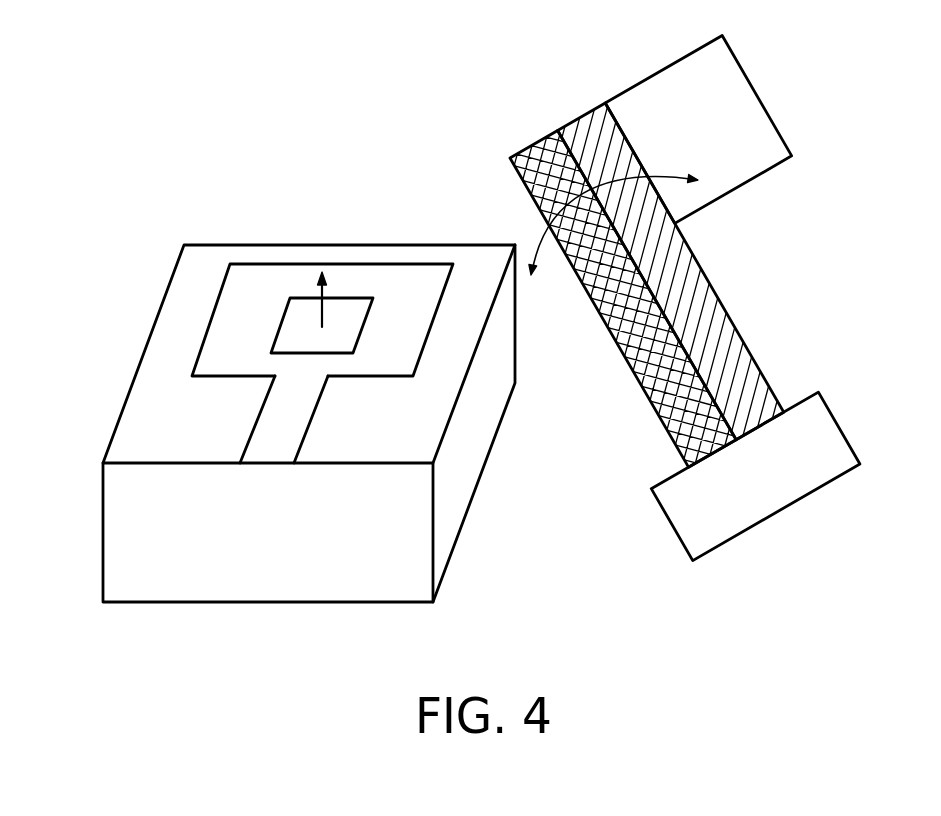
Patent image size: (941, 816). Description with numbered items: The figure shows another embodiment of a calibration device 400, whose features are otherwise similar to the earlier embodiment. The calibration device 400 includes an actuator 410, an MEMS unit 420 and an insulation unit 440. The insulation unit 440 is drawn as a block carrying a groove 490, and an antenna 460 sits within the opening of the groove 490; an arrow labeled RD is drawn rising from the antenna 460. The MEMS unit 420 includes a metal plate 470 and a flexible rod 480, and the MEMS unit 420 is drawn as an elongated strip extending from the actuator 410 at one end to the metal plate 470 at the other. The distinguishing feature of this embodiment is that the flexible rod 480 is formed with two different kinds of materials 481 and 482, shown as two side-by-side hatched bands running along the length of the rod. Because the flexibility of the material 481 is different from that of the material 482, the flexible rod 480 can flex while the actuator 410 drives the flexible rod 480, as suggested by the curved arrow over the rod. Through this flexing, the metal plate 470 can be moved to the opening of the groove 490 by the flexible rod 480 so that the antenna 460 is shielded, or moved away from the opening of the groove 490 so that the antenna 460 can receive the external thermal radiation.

The calibration device 400 is at (186, 80).
The actuator 410 is at (767, 503).
The MEMS unit 420 is at (865, 42).
The insulation unit 440 is at (144, 356).
The antenna 460 is at (356, 310).
The metal plate 470 is at (747, 123).
The flexible rod 480 is at (853, 283).
The material 481 is at (675, 346).
The material 482 is at (740, 383).
The groove 490 is at (411, 278).
The radiation direction RD is at (324, 313).